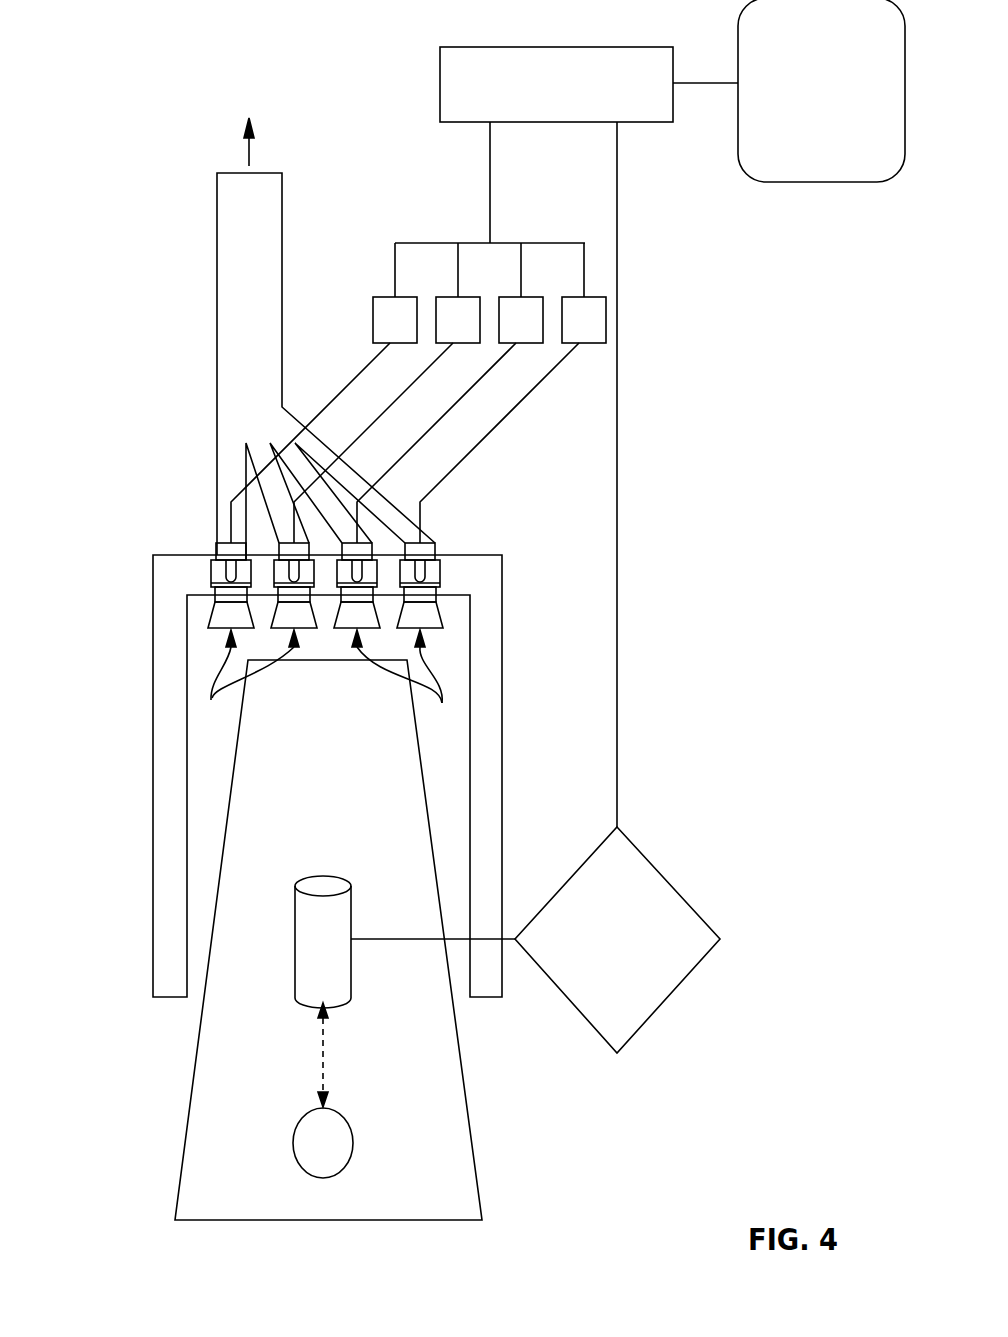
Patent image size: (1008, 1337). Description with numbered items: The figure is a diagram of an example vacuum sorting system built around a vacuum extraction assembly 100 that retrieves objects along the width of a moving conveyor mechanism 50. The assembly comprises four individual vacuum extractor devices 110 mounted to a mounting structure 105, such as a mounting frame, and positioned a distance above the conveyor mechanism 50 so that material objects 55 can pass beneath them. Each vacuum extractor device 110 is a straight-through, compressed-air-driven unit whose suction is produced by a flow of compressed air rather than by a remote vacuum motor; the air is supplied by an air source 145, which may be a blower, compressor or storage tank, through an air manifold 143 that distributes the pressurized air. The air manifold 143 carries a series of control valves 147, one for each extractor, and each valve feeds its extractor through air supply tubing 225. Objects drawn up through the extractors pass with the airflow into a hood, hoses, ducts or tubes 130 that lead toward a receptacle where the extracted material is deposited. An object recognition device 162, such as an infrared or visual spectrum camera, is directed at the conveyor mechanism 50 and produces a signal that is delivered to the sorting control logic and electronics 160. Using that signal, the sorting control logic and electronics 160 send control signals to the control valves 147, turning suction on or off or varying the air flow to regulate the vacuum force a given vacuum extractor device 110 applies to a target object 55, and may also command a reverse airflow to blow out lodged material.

The vacuum extraction assembly 100 is at (259, 776).
The mounting structure 105 is at (163, 972).
The tubes 130 is at (217, 270).
The air manifold 143 is at (440, 83).
The air source 145 is at (738, 33).
The control valves 147 is at (622, 318).
The air supply tubing 225 is at (483, 459).
The vacuum extractor device 110 is at (329, 684).
The conveyor mechanism 50 is at (223, 828).
The object recognition device 162 is at (295, 982).
The target object 55 is at (293, 1147).
The sorting control logic and electronics 160 is at (668, 878).